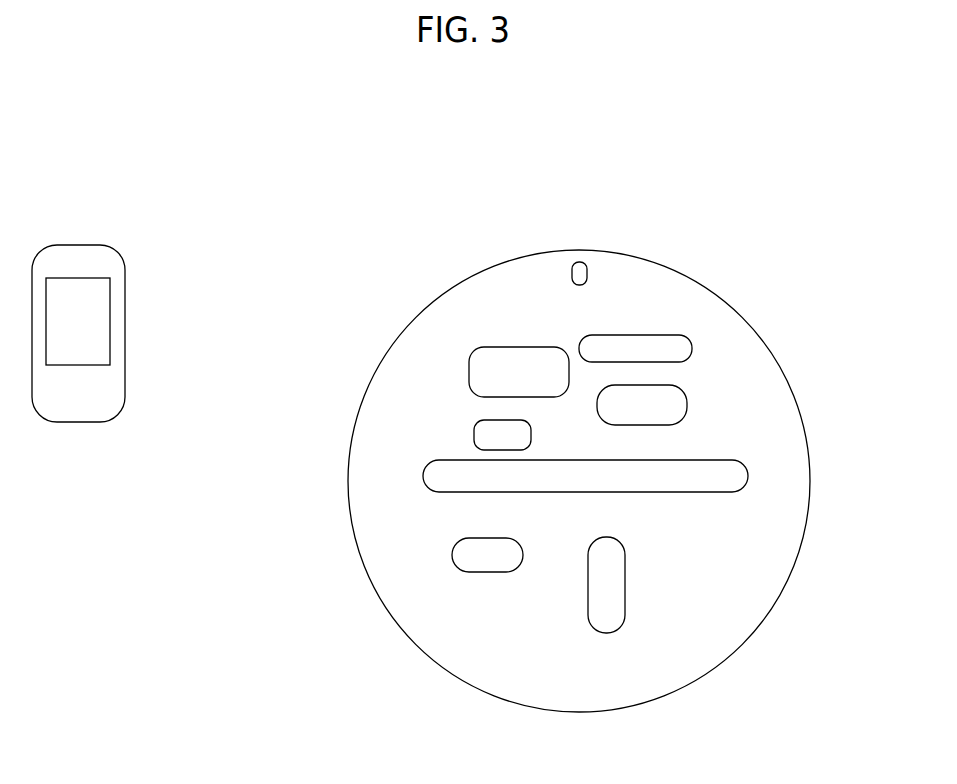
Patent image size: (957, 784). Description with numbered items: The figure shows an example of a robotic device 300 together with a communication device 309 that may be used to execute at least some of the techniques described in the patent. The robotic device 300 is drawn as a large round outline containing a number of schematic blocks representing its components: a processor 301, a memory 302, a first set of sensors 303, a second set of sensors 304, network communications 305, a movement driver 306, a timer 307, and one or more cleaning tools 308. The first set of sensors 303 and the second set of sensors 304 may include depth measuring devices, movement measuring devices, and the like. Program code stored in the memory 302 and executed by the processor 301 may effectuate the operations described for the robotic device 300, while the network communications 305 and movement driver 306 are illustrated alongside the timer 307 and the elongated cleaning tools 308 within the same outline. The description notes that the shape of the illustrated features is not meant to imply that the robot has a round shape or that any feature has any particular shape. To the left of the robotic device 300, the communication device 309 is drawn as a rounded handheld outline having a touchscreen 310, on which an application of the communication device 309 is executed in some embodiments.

The robotic device 300 is at (783, 593).
The processor 301 is at (494, 347).
The memory 302 is at (658, 323).
The first set of sensors 303 is at (588, 268).
The second set of sensors 304 is at (687, 402).
The network communications 305 is at (530, 447).
The movement driver 306 is at (627, 585).
The timer 307 is at (468, 572).
The cleaning tools 308 is at (438, 460).
The communication device 309 is at (123, 395).
The touchscreen 310 is at (110, 320).